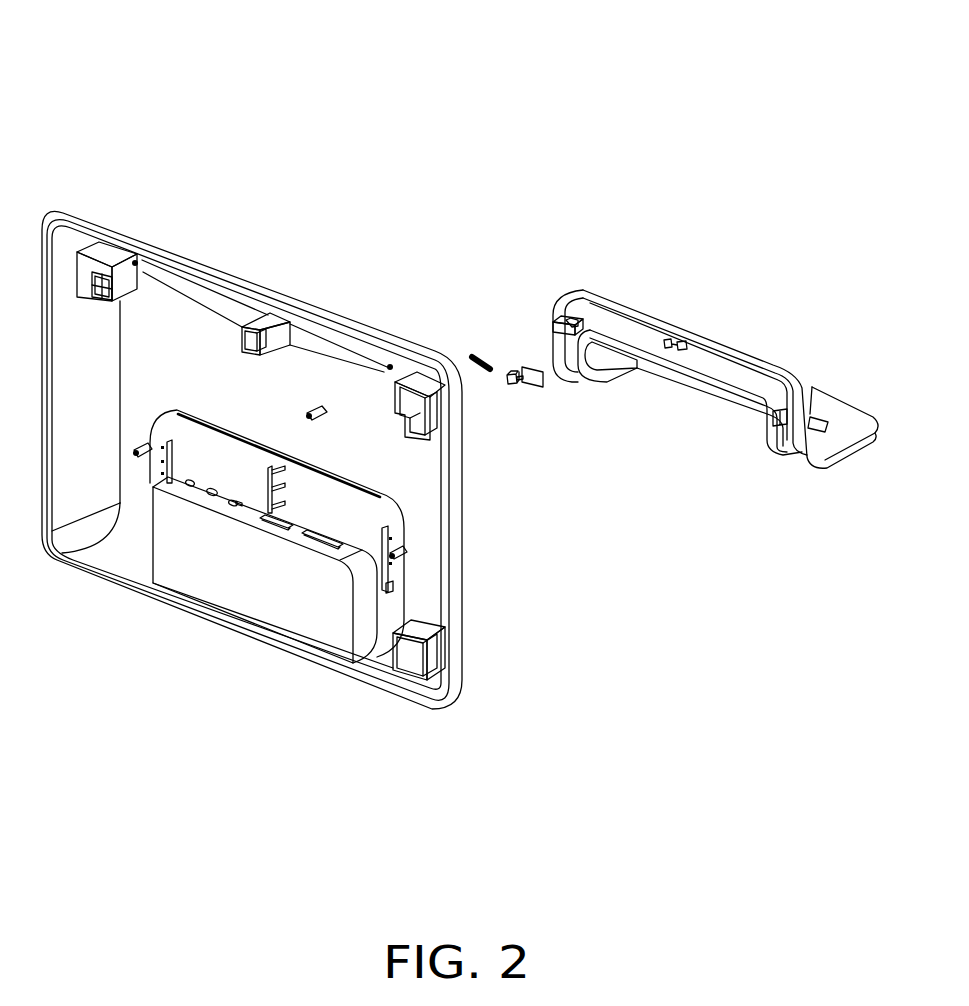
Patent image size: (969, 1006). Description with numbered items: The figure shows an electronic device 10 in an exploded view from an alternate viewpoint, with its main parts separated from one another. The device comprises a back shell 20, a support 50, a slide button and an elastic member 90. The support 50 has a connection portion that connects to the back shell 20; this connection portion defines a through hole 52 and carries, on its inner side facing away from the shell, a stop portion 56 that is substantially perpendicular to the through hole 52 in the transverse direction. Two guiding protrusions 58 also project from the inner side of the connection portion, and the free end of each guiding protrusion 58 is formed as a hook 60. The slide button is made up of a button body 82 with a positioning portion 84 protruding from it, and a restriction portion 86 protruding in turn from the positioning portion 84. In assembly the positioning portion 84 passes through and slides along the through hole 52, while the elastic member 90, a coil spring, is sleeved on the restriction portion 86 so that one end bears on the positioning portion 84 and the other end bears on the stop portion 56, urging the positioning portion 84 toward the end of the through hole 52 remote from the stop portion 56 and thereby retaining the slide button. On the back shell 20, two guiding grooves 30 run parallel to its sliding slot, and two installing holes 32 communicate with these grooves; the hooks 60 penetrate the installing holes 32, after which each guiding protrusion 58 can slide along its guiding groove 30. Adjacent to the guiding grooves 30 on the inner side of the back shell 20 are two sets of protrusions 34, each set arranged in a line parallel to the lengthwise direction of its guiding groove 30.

The electronic device 10 is at (376, 86).
The back shell 20 is at (153, 251).
The guiding groove 30 is at (388, 529).
The installing hole 32 is at (396, 592).
The protrusions 34 is at (408, 556).
The support 50 is at (843, 420).
The through hole 52 is at (685, 343).
The stop portion 56 is at (660, 337).
The guiding protrusion 58 is at (568, 322).
The hook 60 is at (555, 325).
The button body 82 is at (545, 384).
The positioning portion 84 is at (512, 384).
The restriction portion 86 is at (519, 372).
The elastic member 90 is at (473, 352).